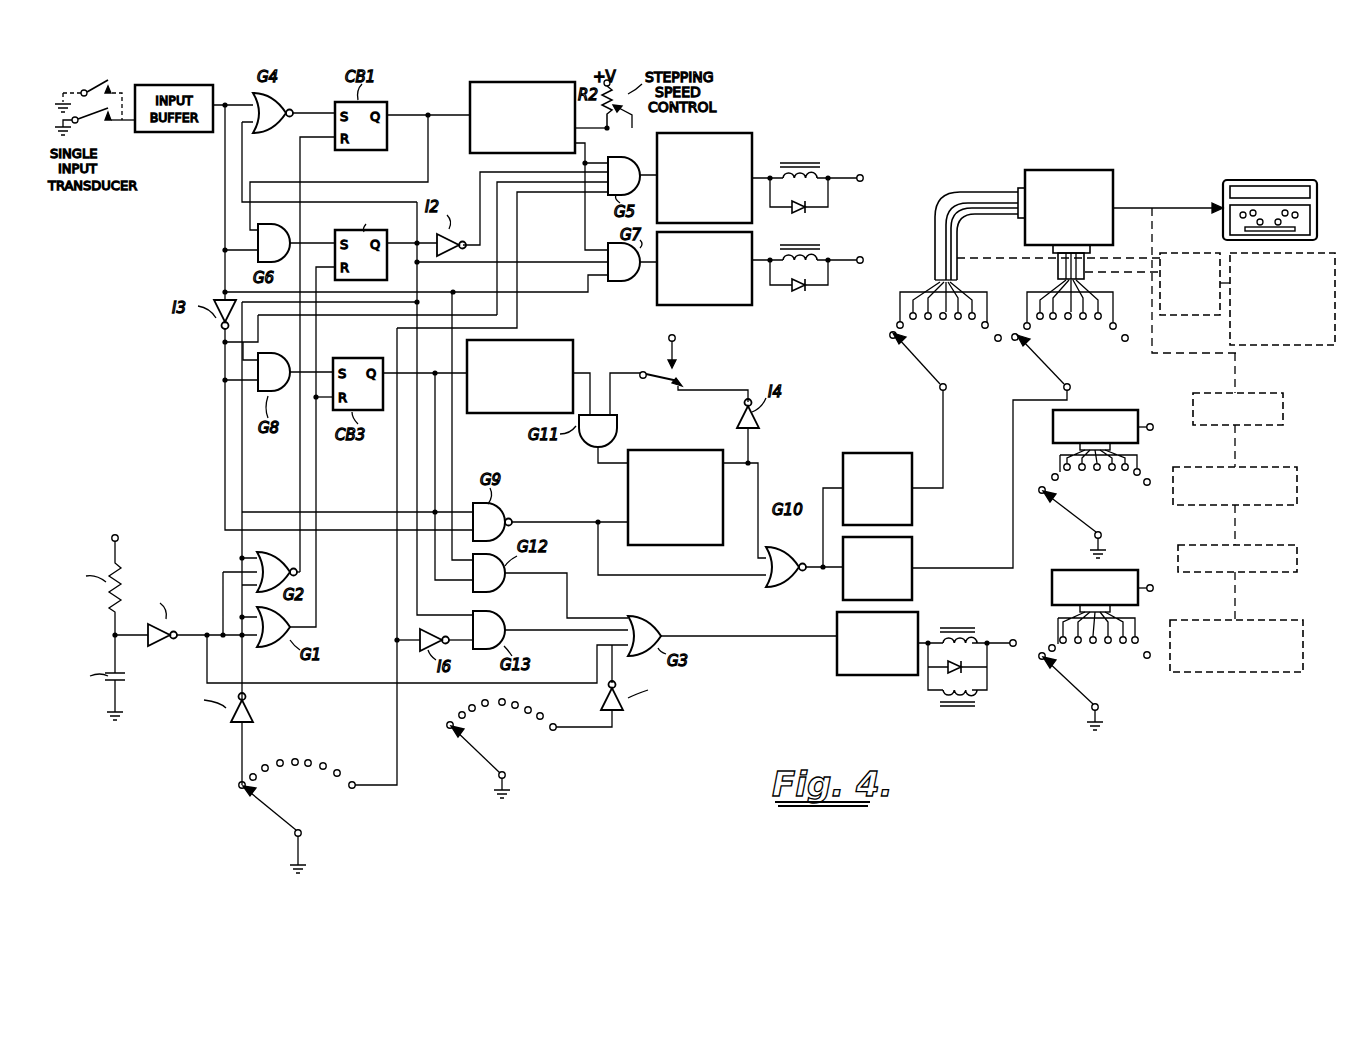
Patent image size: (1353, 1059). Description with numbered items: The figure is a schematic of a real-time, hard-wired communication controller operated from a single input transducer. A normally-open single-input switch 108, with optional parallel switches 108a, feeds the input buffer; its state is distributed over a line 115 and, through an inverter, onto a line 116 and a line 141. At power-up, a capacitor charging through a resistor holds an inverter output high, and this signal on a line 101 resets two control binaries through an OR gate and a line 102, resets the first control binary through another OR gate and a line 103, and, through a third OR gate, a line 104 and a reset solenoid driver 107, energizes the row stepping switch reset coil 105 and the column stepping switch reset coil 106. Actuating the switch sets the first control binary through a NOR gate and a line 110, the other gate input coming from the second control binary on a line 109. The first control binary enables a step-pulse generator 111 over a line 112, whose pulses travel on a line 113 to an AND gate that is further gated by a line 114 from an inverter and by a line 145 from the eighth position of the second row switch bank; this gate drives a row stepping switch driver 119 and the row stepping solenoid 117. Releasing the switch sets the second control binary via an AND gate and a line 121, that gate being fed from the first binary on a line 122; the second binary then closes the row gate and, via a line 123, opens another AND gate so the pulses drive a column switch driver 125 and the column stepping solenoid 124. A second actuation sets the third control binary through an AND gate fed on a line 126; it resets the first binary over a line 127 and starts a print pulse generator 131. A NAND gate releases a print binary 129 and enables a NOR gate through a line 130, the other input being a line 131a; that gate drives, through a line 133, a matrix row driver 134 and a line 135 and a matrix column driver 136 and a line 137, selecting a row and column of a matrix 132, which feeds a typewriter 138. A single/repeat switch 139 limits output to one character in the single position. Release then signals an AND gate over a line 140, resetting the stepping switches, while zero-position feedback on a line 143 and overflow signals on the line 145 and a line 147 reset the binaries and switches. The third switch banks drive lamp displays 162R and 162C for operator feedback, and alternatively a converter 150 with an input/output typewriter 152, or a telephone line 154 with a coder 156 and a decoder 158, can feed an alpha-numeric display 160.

The line 101 is at (177, 643).
The line 102 is at (298, 572).
The line 103 is at (300, 469).
The line 104 is at (753, 630).
The row stepping switch reset coil 105 is at (984, 628).
The column stepping switch reset coil 106 is at (926, 699).
The reset solenoid driver 107 is at (837, 672).
The single-input switch 108 is at (92, 128).
The parallel switch 108a is at (108, 80).
The line 109 is at (242, 164).
The line 110 is at (320, 113).
The step-pulse generator 111 is at (469, 139).
The line 112 is at (458, 110).
The line 113 is at (590, 154).
The line 114 is at (478, 192).
The line 115 is at (218, 254).
The line 116 is at (497, 205).
The row stepping switch stepping solenoid 117 is at (804, 160).
The row stepping switch driver 119 is at (749, 132).
The line 121 is at (332, 239).
The line 122 is at (342, 182).
The line 123 is at (540, 262).
The column stepping switch stepping solenoid 124 is at (806, 242).
The column switch driver 125 is at (755, 307).
The line 126 is at (366, 316).
The line 127 is at (397, 480).
The print binary 129 is at (628, 493).
The line 130 is at (692, 576).
The print pulse generator 131 is at (563, 342).
The line 131a is at (758, 480).
The matrix 132 is at (1009, 174).
The line 133 is at (807, 562).
The matrix row driver 134 is at (868, 452).
The line 135 is at (926, 491).
The matrix column driver 136 is at (842, 592).
The line 137 is at (952, 566).
The typewriter 138 is at (1266, 180).
The single/repeat switch 139 is at (652, 335).
The line 140 is at (452, 450).
The line 141 is at (364, 532).
The line 143 is at (240, 736).
The line 145 is at (388, 720).
The line 147 is at (602, 727).
The ASCII code converter 150 is at (1207, 252).
The input/output typewriter 152 is at (1220, 340).
The telephone line 154 is at (1258, 506).
The coder 156 is at (1278, 393).
The decoder 158 is at (1190, 532).
The alpha-numeric display 160 is at (1311, 354).
The row lamp display 162R is at (1122, 410).
The column lamp display 162C is at (1054, 570).